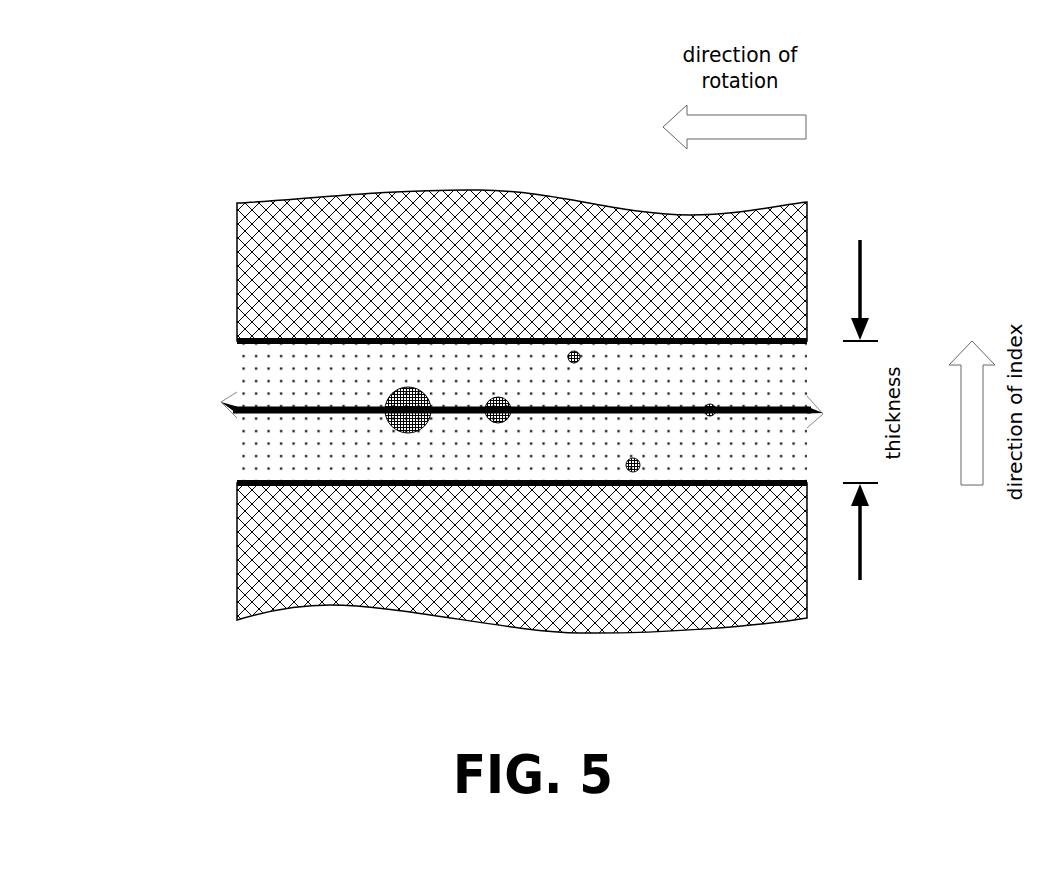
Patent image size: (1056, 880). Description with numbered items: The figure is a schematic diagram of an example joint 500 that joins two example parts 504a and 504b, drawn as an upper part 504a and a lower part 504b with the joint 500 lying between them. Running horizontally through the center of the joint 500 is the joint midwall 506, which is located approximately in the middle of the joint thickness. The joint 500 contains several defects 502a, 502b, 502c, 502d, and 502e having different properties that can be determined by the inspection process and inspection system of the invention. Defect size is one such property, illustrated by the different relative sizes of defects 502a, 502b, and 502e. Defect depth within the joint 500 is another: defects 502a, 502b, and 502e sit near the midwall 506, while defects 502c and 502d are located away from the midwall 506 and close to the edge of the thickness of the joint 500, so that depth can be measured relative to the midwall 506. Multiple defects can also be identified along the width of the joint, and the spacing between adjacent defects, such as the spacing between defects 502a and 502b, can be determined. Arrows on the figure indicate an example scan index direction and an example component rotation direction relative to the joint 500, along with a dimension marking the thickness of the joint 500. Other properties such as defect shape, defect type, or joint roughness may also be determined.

The joint 500 is at (236, 364).
The defect 502a is at (402, 389).
The defect 502b is at (497, 397).
The defect 502c is at (573, 351).
The defect 502d is at (631, 473).
The defect 502e is at (710, 417).
The part 504a is at (236, 227).
The part 504b is at (232, 606).
The joint midwall 506 is at (292, 414).